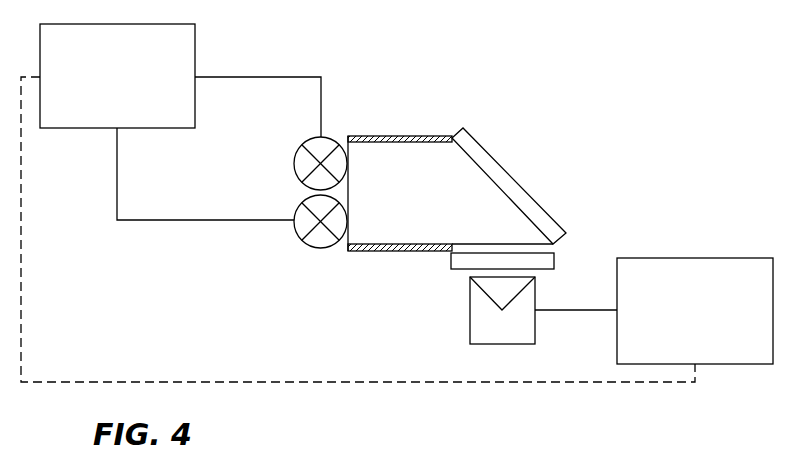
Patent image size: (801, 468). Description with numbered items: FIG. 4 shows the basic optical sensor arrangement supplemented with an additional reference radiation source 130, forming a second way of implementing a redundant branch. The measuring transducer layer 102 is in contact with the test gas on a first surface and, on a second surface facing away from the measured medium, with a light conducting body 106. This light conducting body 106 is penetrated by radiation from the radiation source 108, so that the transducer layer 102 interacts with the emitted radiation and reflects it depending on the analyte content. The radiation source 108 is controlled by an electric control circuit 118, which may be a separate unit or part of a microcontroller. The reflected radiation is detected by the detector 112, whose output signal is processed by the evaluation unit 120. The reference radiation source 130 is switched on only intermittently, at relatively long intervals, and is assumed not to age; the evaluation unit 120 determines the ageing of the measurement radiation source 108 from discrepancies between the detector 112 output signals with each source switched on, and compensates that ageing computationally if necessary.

The measuring transducer layer 102 is at (517, 193).
The light conducting body 106 is at (415, 223).
The radiation source 108 is at (294, 164).
The detector 112 is at (470, 310).
The electric control circuit 118 is at (168, 114).
The evaluation unit 120 is at (754, 343).
The reference radiation source 130 is at (302, 240).